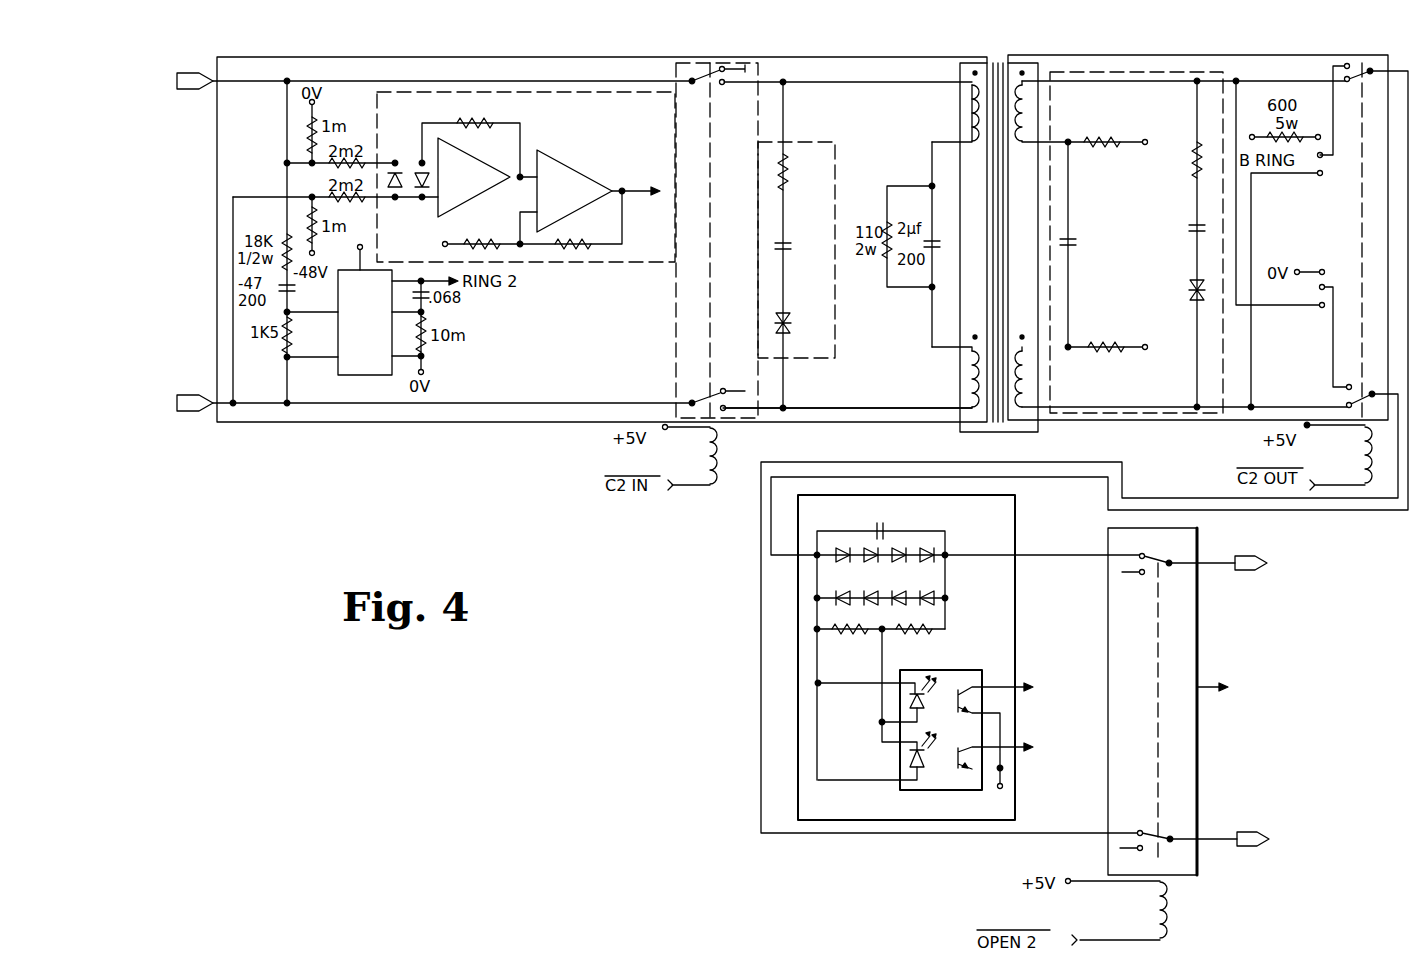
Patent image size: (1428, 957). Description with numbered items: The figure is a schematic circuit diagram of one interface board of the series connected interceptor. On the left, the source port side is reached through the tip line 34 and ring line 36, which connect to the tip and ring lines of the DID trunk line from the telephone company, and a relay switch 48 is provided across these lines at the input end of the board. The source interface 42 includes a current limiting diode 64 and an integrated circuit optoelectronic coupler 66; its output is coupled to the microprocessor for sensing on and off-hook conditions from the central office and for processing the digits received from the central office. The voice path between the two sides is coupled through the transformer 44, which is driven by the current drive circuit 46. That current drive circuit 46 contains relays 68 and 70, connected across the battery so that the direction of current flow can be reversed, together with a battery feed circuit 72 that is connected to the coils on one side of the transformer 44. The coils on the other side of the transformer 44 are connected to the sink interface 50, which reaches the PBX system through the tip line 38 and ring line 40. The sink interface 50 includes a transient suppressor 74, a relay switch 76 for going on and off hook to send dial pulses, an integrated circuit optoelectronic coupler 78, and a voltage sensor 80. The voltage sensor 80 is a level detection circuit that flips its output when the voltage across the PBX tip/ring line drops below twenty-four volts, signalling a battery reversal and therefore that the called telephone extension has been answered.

The tip line 34 is at (1243, 556).
The ring line 36 is at (1247, 832).
The tip line 38 is at (196, 73).
The ring line 40 is at (193, 416).
The source interface 42 is at (1015, 510).
The transformer 44 is at (997, 58).
The current drive circuit 46 is at (1154, 55).
The relay switch 48 is at (1197, 668).
The sink interface 50 is at (632, 57).
The current limiting diode 64 is at (945, 535).
The integrated circuit optoelectronic coupler 66 is at (965, 670).
The relay 68 is at (1360, 68).
The relay 70 is at (1368, 378).
The battery feed circuit 72 is at (1092, 70).
The transient suppressor 74 is at (835, 143).
The relay switch 76 is at (758, 62).
The integrated circuit optoelectronic coupler 78 is at (338, 376).
The voltage sensor 80 is at (606, 91).